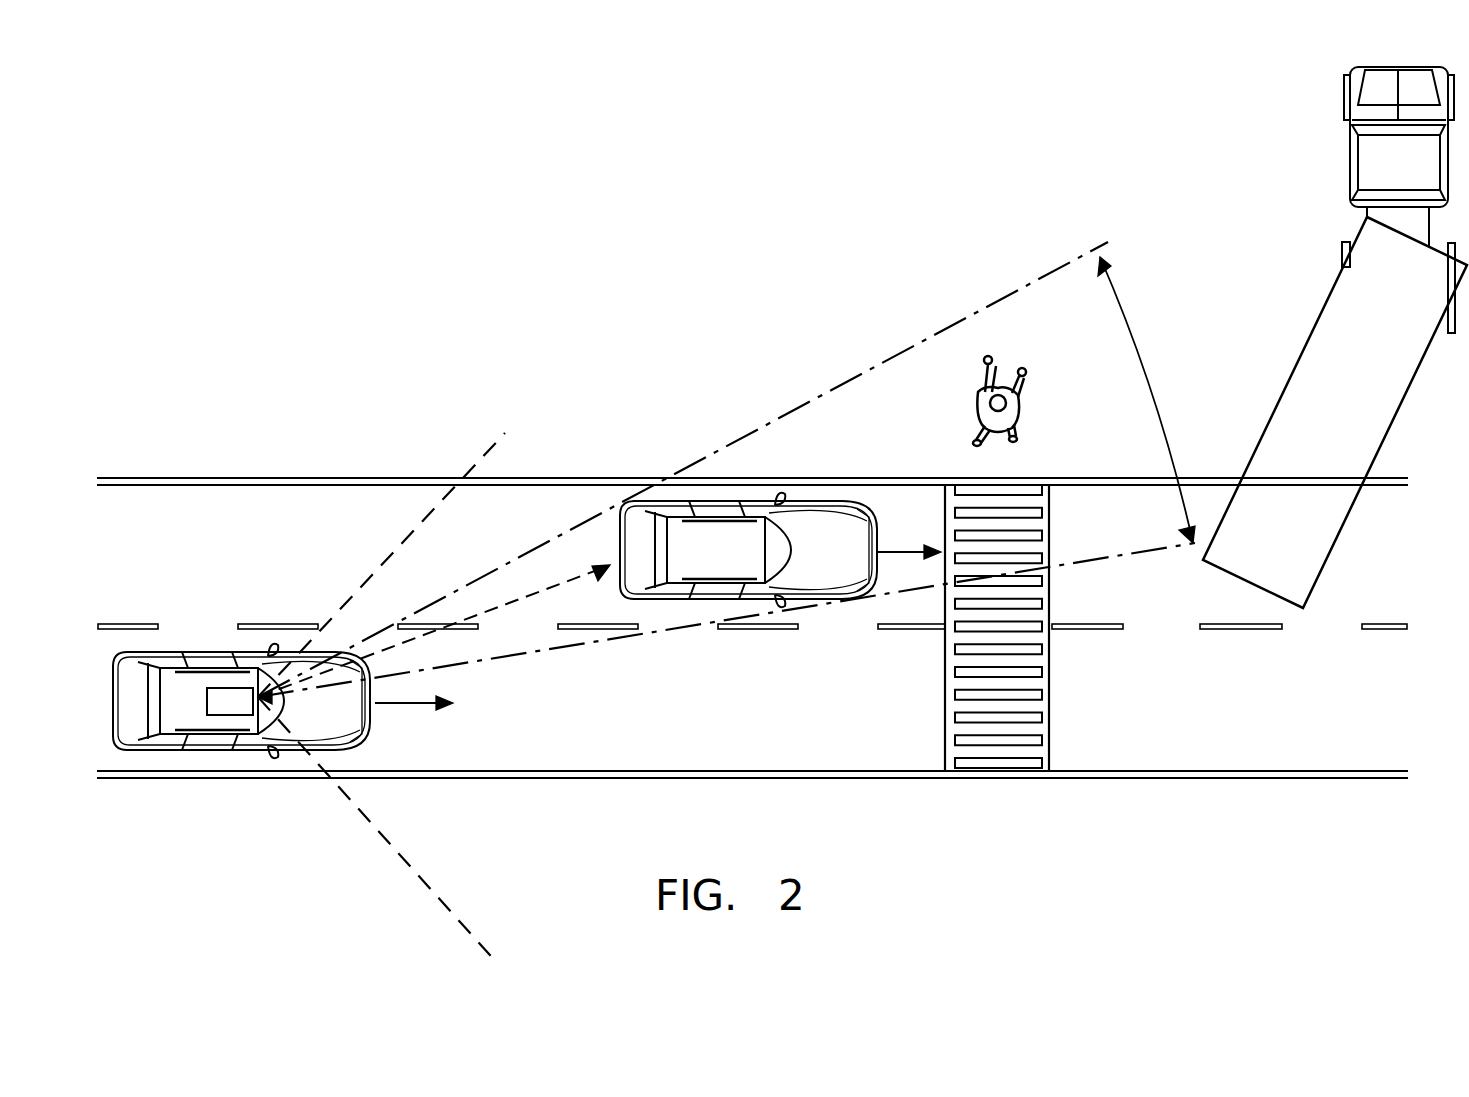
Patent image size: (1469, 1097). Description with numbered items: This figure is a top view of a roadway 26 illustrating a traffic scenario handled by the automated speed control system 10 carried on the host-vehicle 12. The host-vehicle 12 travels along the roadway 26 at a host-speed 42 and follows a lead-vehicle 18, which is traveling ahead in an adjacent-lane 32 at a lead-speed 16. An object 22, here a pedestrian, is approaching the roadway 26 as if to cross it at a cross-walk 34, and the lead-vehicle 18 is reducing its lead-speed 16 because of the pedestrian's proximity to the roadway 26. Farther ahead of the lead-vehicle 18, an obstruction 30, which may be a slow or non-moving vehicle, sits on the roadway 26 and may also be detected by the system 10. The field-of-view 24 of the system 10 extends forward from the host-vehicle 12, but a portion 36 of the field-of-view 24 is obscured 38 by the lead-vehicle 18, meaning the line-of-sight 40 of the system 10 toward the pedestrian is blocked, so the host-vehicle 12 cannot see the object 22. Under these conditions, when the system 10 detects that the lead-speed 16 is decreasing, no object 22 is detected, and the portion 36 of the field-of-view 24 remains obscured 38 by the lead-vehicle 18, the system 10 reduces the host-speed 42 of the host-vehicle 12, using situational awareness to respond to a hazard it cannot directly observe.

The automated speed control system 10 is at (218, 710).
The host-vehicle 12 is at (257, 652).
The lead-speed 16 is at (907, 553).
The lead-vehicle 18 is at (743, 497).
The object 22 is at (985, 395).
The field-of-view 24 is at (478, 458).
The roadway 26 is at (181, 500).
The obstruction 30 is at (1313, 592).
The adjacent-lane 32 is at (381, 661).
The cross-walk 34 is at (1052, 730).
The portion 36 is at (1137, 333).
The obscured 38 is at (846, 443).
The line-of-sight 40 is at (510, 603).
The host-speed 42 is at (418, 705).